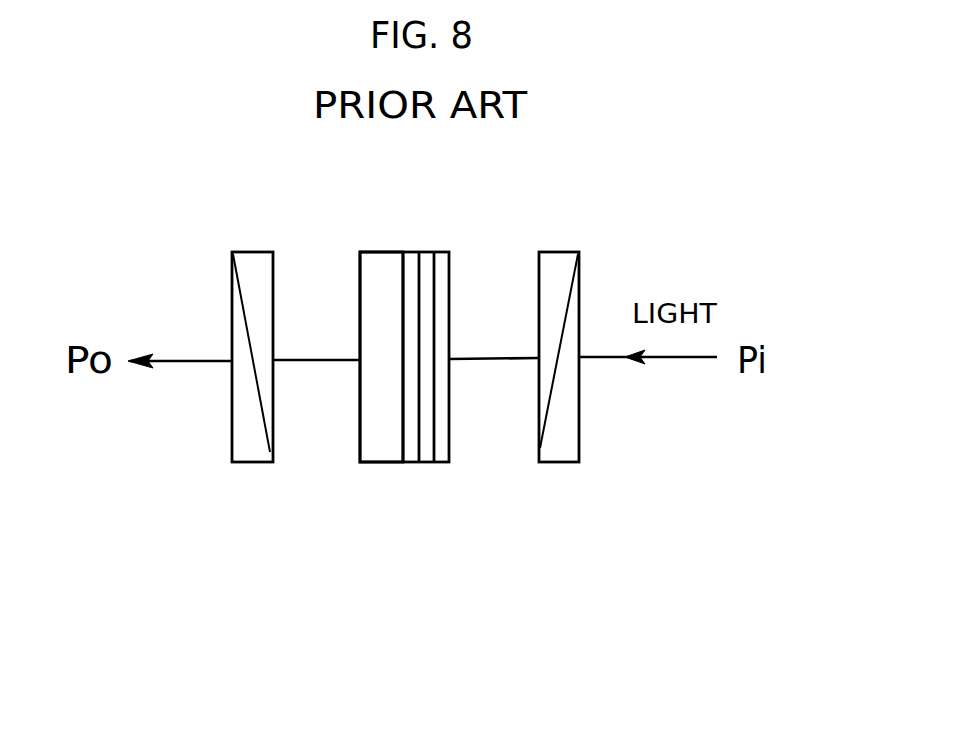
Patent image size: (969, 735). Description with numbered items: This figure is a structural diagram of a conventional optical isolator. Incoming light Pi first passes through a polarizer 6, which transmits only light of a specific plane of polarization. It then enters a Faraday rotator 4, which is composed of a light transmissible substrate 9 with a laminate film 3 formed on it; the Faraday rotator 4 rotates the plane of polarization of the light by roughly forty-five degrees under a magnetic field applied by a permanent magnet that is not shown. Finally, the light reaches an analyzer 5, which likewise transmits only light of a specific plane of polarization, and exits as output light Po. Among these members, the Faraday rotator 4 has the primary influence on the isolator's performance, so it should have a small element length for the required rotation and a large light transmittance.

The laminate film 3 is at (408, 241).
The Faraday rotator 4 is at (395, 336).
The analyzer 5 is at (248, 464).
The polarizer 6 is at (567, 463).
The light transmissible substrate 9 is at (234, 296).